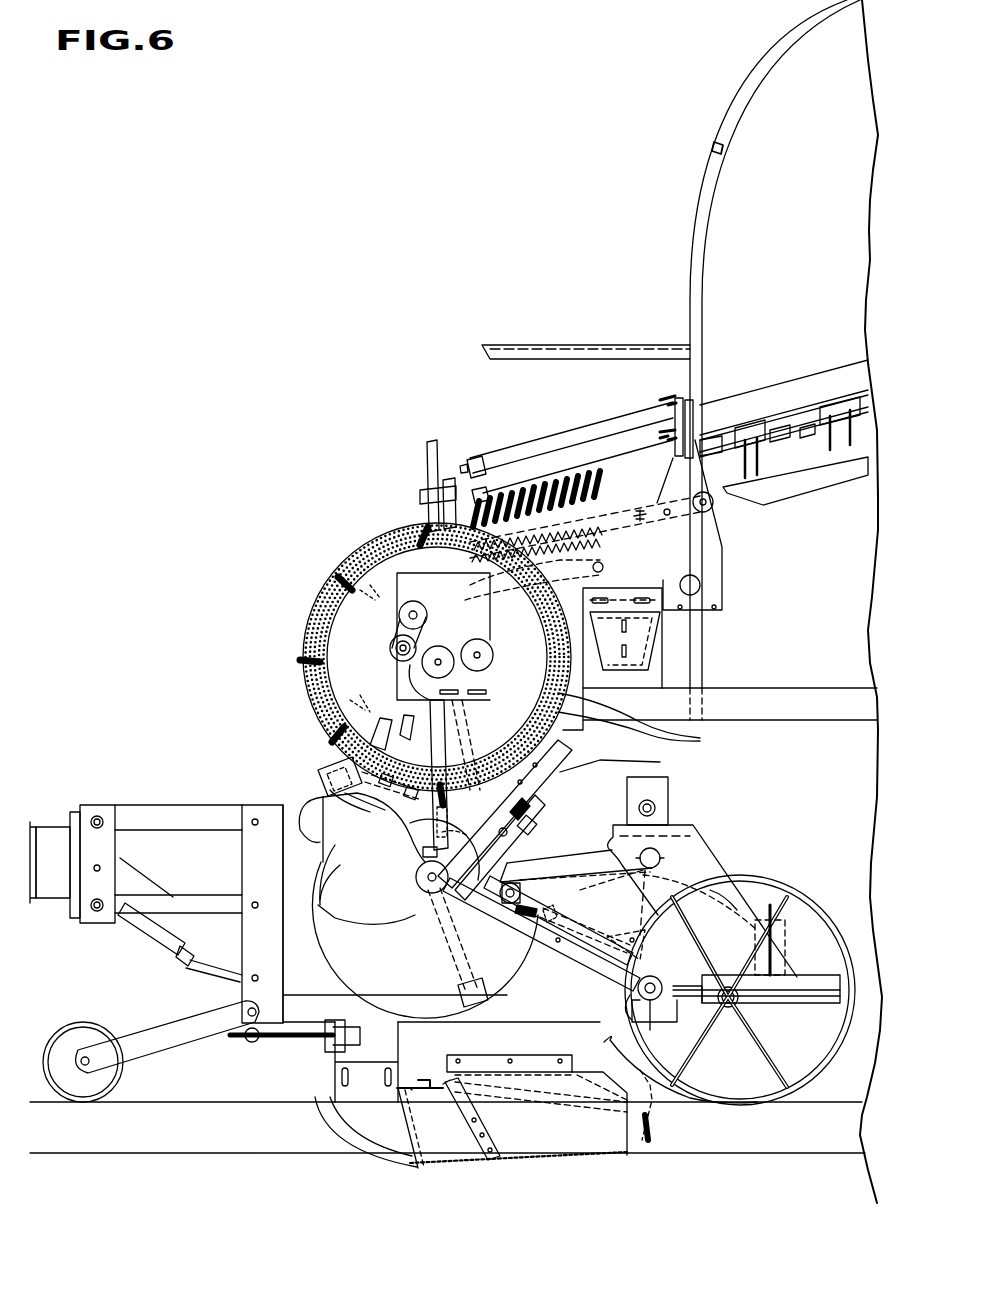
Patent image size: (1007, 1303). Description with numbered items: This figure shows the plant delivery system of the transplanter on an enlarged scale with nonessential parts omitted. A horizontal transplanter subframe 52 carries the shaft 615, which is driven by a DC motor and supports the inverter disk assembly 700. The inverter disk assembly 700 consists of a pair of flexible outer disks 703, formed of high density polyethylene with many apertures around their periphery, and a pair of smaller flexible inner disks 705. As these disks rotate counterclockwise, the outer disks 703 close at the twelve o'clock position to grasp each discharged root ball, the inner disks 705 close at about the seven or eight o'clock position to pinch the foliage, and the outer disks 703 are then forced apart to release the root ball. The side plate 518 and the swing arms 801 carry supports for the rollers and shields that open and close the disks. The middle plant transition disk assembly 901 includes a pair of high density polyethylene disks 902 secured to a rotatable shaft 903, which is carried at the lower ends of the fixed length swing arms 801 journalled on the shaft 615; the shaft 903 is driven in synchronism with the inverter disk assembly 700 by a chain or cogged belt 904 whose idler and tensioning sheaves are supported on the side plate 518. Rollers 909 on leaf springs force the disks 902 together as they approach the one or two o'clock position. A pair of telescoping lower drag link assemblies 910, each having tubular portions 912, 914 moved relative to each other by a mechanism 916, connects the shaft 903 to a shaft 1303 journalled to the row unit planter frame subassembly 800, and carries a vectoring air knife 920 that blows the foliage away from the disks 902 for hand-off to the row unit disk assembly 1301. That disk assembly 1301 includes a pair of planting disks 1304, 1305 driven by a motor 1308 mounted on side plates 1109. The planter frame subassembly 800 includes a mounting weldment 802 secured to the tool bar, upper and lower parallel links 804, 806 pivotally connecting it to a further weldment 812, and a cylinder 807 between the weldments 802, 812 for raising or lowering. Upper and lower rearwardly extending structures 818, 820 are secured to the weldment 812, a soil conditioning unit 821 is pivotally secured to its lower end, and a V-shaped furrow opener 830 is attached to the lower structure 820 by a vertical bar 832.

The horizontal transplanter subframe 52 is at (790, 705).
The left side plate 518 is at (683, 540).
The shaft 615 is at (345, 693).
The inverter disk assembly 700 is at (338, 530).
The flexible outer disks 703 is at (548, 740).
The flexible inner disks 705 is at (700, 739).
The row unit planter frame subassembly 800 is at (272, 1060).
The fixed length swing arms 801 is at (330, 760).
The mounting weldment 802 is at (78, 915).
The upper parallel link 804 is at (145, 830).
The lower parallel link 806 is at (210, 910).
The cylinder 807 is at (170, 927).
The further weldment 812 is at (262, 822).
The upper rearwardly extending structure 818 is at (318, 835).
The lower rearwardly extending structure 820 is at (348, 1020).
The soil conditioning unit 821 is at (157, 1072).
The furrow opener 830 is at (340, 1177).
The vertical bar 832 is at (377, 1047).
The middle plant transition disk assembly 901 is at (548, 830).
The high density polyethylene plastic disks 902 is at (384, 894).
The rotatable shaft 903 is at (320, 905).
The chain or cogged belt 904 is at (560, 597).
The rollers 909 is at (546, 826).
The telescoping lower drag link assemblies 910 is at (630, 998).
The telescoping tubular portion 912 is at (547, 948).
The telescoping tubular portion 914 is at (462, 935).
The telescoping mechanism 916 is at (638, 918).
The vectoring air knife 920 is at (562, 902).
The side plates 1109 is at (690, 860).
The row unit disk assembly 1301 is at (740, 1082).
The shaft 1303 is at (650, 1017).
The planting disk 1304 is at (500, 1000).
The planting disk 1305 is at (560, 1048).
The motor 1308 is at (660, 805).